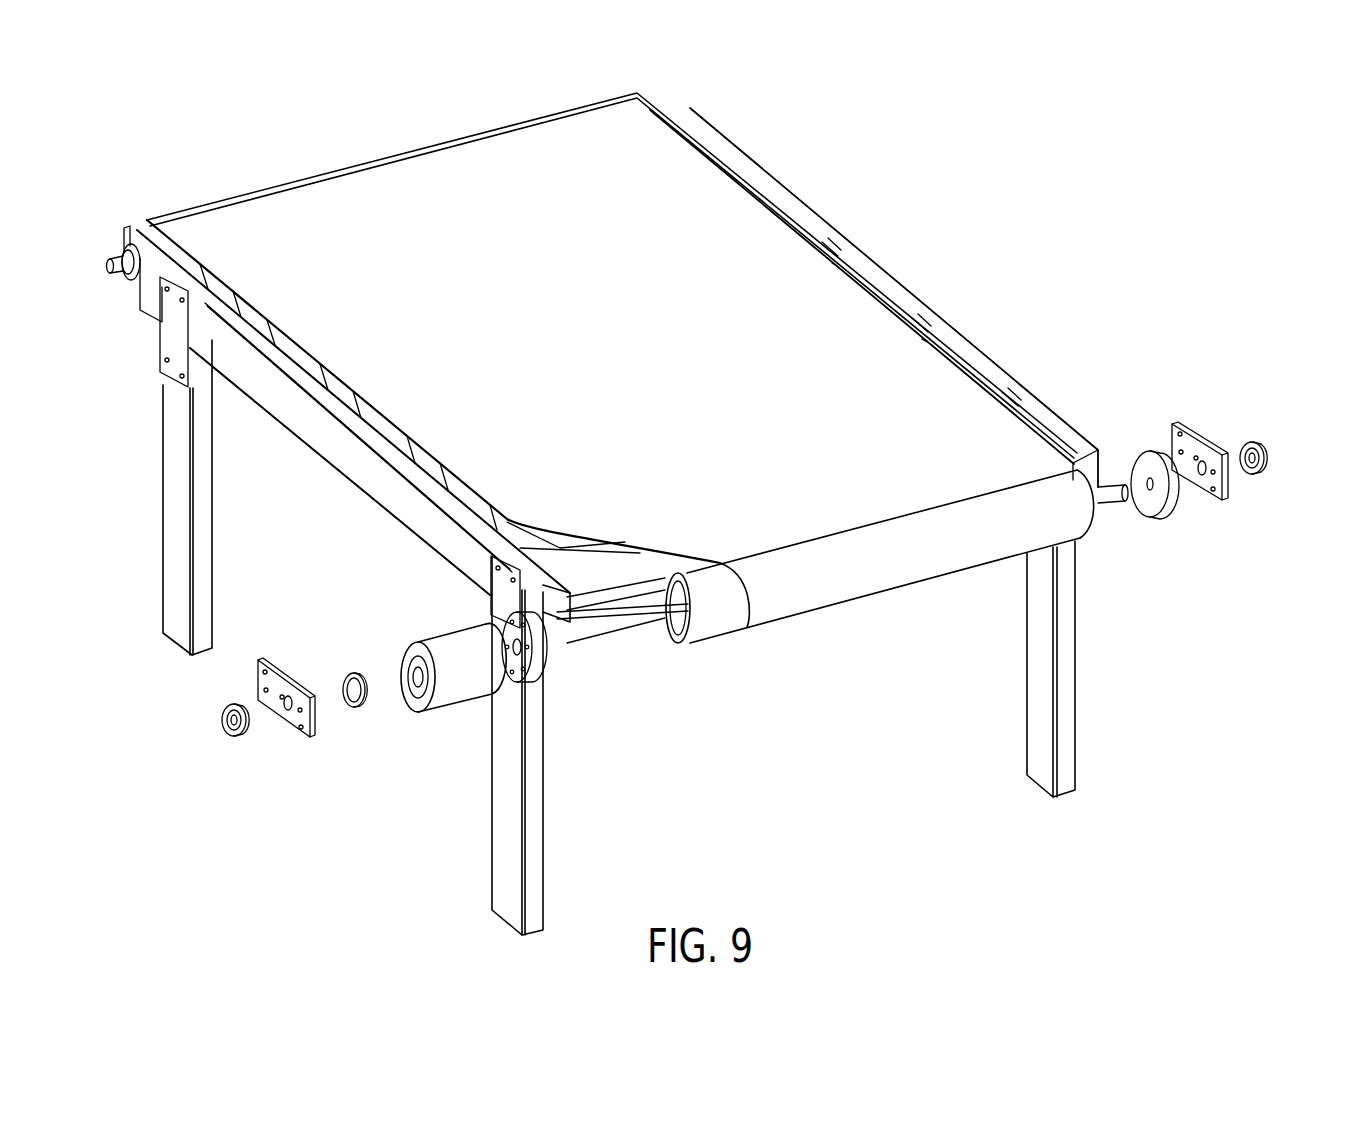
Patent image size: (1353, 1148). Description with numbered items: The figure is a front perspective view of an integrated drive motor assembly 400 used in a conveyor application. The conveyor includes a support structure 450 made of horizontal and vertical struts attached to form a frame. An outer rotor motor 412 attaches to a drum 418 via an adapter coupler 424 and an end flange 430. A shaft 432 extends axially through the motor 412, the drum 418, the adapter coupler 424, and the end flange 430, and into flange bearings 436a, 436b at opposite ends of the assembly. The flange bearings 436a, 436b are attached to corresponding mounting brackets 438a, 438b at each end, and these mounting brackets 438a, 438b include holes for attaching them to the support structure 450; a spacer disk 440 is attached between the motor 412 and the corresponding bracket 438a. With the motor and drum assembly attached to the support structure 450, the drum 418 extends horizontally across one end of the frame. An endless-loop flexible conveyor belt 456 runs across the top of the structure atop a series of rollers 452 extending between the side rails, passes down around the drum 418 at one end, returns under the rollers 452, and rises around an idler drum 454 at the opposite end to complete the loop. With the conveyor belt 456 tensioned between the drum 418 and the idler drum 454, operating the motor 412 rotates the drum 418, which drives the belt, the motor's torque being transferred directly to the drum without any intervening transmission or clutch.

The conveyor assembly 400 is at (1005, 112).
The outer rotor motor 412 is at (465, 688).
The drum 418 is at (713, 620).
The adapter coupler 424 is at (550, 670).
The end flange 430 is at (1143, 463).
The shaft 432 is at (617, 622).
The flange bearing 436a is at (220, 712).
The flange bearing 436b is at (1252, 440).
The mounting bracket 438a is at (300, 735).
The mounting bracket 438b is at (1218, 498).
The retaining ring 440 is at (357, 708).
The support structure 450 is at (290, 408).
The rollers 452 is at (835, 252).
The idler drum 454 is at (147, 221).
The conveyor belt 456 is at (445, 185).